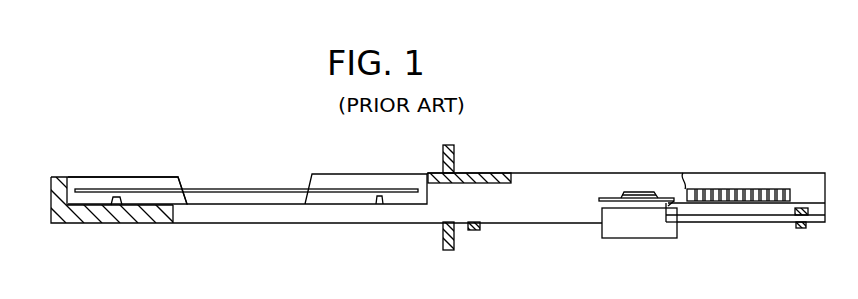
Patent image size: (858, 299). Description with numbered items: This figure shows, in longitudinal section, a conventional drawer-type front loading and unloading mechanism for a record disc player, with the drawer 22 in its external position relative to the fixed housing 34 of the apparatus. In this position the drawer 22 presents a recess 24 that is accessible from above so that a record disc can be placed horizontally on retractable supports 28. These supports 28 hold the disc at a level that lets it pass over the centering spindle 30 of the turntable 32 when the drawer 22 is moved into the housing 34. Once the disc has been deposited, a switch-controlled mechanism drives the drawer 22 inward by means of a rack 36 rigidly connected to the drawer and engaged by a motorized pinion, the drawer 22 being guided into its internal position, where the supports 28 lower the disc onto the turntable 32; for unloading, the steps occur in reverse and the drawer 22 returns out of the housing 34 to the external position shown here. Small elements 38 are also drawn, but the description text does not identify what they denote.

The drawer 22 is at (84, 231).
The recess 24 is at (105, 189).
The retractable supports 28 is at (135, 224).
The centering spindle 30 is at (652, 191).
The turntable 32 is at (604, 197).
The fixed housing 34 is at (443, 240).
The rack 36 is at (758, 188).
The solder joints 38 is at (480, 228).